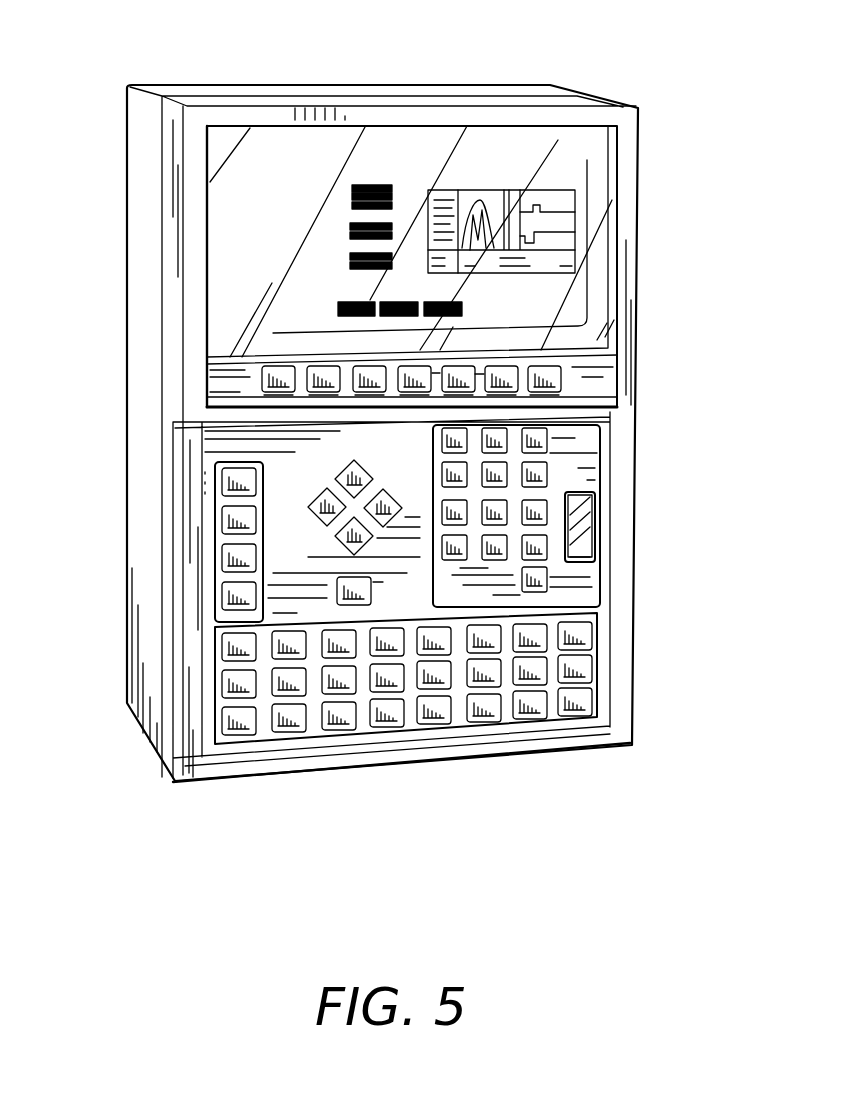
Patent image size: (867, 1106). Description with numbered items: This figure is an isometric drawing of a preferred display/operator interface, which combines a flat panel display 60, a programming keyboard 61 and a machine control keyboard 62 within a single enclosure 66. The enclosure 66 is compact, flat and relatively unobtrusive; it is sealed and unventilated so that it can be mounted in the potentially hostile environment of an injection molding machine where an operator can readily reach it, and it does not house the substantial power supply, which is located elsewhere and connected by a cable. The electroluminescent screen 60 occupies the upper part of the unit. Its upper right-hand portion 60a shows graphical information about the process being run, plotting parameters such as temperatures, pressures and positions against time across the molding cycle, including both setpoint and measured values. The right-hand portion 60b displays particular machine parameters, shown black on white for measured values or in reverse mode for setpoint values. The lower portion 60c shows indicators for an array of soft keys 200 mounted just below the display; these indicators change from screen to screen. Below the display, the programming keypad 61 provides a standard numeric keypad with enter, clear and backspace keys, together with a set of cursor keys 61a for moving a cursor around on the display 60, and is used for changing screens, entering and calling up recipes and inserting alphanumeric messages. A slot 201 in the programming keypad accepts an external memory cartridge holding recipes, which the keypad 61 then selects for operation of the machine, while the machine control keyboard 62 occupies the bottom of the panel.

The flat panel display 60 is at (233, 192).
The upper right-hand portion of the display 60a is at (553, 167).
The right-hand portion of the display 60b is at (382, 152).
The lower portion of the screen 60c is at (533, 302).
The enclosure 66 is at (137, 259).
The soft keys 200 is at (573, 371).
The programming keyboard 61 is at (563, 460).
The cursor keys 61a is at (318, 490).
The slot 201 is at (578, 525).
The machine control keyboard 62 is at (460, 700).